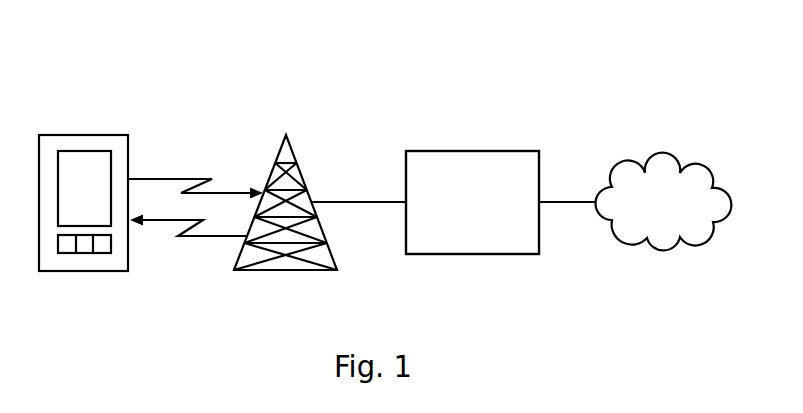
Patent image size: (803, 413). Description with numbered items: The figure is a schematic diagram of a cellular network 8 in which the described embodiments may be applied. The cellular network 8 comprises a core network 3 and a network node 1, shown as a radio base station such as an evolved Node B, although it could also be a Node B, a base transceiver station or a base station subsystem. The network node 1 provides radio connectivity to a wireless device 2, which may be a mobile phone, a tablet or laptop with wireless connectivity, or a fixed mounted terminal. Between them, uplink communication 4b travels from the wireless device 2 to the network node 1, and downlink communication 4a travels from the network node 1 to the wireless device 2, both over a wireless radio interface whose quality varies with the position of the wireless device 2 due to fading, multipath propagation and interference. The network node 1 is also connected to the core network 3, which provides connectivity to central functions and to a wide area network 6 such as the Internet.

The network node 1 is at (301, 166).
The wireless device 2 is at (88, 132).
The core network 3 is at (464, 196).
The downlink communication 4a is at (193, 237).
The uplink communication 4b is at (177, 177).
The wide area network 6 is at (655, 250).
The cellular network 8 is at (608, 75).